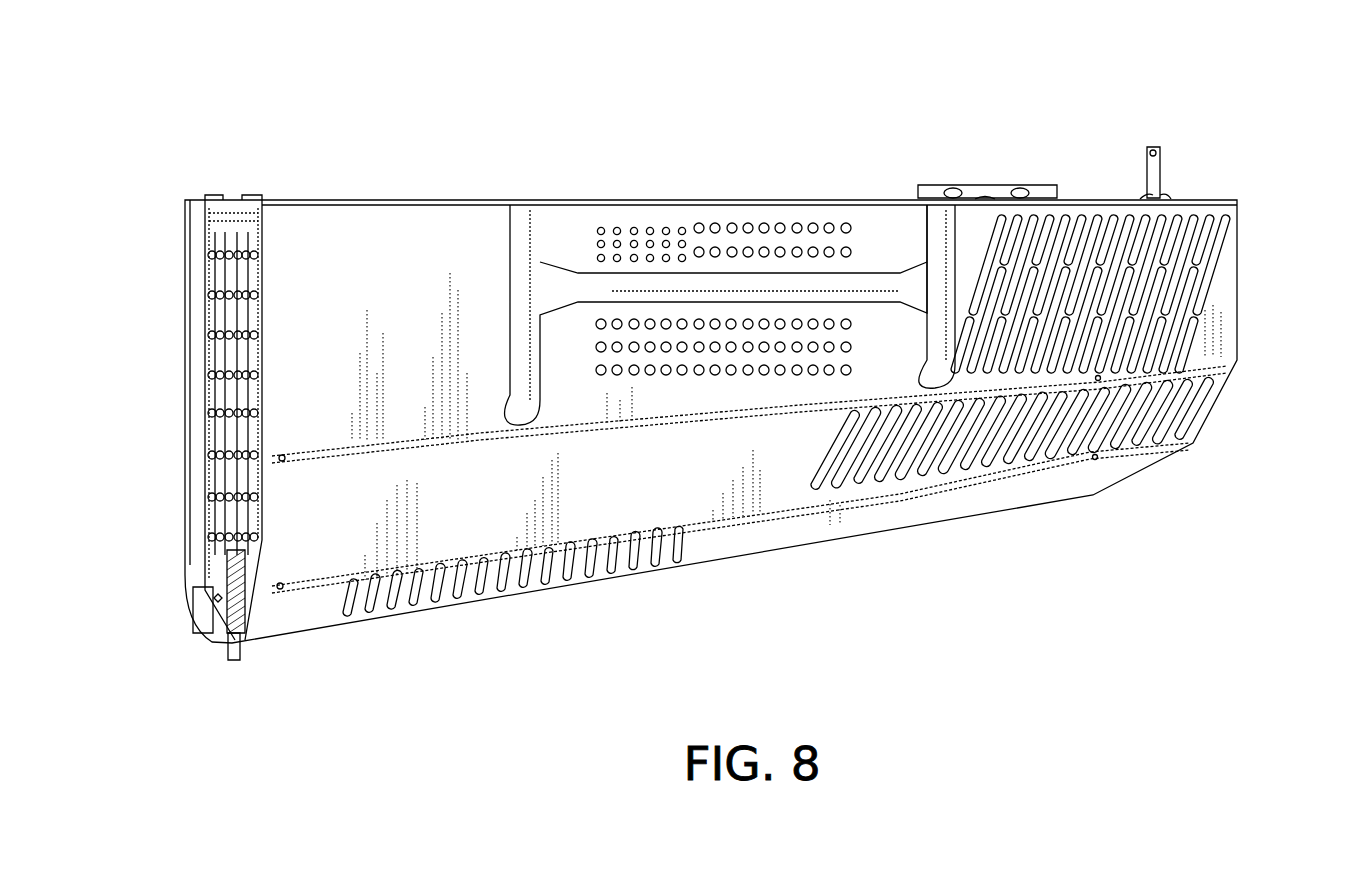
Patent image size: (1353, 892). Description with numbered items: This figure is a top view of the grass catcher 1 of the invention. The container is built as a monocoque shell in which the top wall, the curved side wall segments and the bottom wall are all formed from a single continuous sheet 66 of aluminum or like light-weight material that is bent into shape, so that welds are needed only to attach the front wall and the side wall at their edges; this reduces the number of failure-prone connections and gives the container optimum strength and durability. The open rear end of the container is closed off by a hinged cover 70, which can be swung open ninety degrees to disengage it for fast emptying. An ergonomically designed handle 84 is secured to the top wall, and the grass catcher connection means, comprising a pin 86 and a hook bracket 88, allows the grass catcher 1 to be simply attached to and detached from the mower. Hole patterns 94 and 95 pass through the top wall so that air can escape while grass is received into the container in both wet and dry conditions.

The grass catcher 1 is at (793, 147).
The continuous sheet 66 is at (780, 485).
The hinged cover 70 is at (213, 303).
The handle 84 is at (594, 285).
The pin 86 is at (1162, 173).
The hook bracket 88 is at (990, 185).
The hole pattern 94 is at (718, 225).
The hole pattern 95 is at (1153, 287).